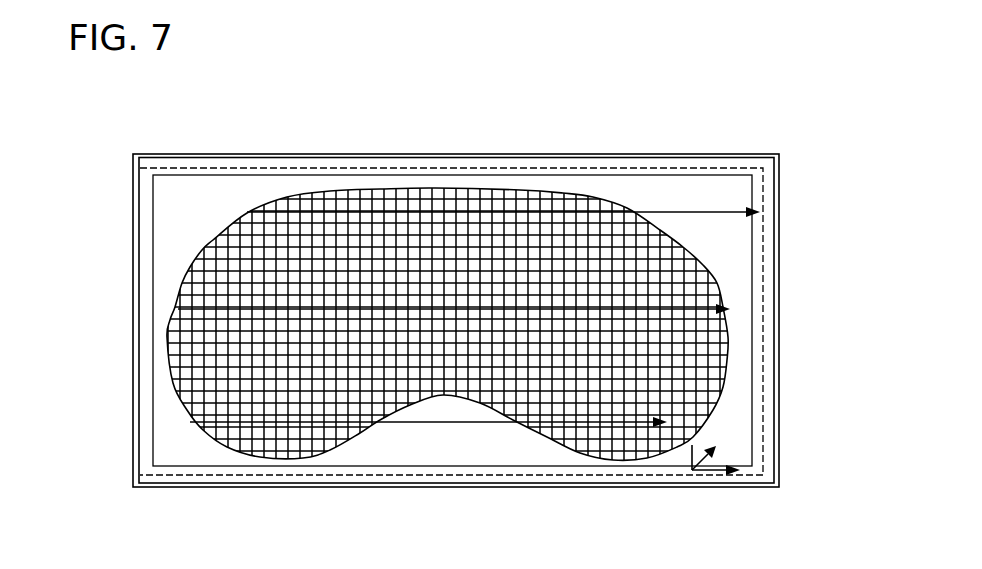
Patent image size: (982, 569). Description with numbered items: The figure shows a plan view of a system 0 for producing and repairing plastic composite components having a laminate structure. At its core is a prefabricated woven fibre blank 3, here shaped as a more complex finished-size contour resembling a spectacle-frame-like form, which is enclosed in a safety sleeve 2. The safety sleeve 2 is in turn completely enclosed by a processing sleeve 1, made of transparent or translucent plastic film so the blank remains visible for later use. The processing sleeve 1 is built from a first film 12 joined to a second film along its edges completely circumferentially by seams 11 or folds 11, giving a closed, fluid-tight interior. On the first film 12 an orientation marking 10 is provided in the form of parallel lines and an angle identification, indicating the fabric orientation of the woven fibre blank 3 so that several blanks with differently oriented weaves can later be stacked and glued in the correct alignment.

The system 0 is at (652, 135).
The processing sleeve 1 is at (747, 152).
The safety sleeve 2 is at (752, 248).
The woven fibre blank 3 is at (381, 382).
The orientation marking 10 is at (622, 420).
The seam 11 is at (268, 168).
The first film 12 is at (742, 340).